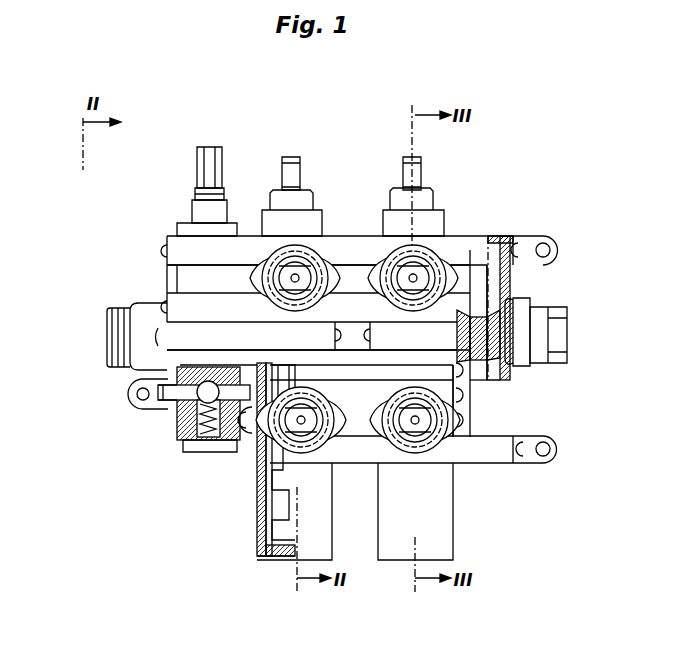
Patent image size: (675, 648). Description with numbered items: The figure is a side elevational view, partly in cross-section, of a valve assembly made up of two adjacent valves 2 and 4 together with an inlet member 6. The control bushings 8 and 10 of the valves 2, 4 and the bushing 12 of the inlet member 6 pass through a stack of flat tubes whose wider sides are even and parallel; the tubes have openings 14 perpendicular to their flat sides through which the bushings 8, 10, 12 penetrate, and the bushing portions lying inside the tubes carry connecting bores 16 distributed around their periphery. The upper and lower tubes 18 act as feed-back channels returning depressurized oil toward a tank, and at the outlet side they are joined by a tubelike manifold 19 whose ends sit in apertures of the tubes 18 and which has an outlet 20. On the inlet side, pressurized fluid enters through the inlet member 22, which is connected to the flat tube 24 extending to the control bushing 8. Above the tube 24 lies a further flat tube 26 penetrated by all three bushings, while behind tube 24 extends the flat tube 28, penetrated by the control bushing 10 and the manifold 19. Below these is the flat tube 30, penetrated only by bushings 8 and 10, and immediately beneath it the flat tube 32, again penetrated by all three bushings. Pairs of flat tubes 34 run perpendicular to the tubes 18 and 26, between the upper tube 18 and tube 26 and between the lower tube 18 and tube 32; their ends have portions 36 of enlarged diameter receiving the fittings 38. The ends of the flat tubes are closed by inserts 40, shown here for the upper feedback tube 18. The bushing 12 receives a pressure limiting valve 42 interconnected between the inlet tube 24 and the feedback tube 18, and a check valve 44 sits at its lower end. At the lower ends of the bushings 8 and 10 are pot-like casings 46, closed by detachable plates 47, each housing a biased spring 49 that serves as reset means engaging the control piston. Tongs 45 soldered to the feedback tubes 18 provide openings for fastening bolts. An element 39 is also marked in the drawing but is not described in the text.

The valve 2 is at (298, 222).
The valve 4 is at (410, 200).
The inlet member 6 is at (188, 221).
The control bushing 8 is at (300, 215).
The control bushing 10 is at (430, 220).
The bushing 12 is at (192, 283).
The openings 14 is at (175, 402).
The connecting bores 16 is at (250, 433).
The feed-back tubes 18 is at (460, 247).
The manifold 19 is at (508, 363).
The outlet 20 is at (557, 343).
The inlet member 22 is at (105, 324).
The flat tube 24 is at (197, 340).
The flat tube 26 is at (178, 307).
The flat tube 28 is at (512, 366).
The flat tube 30 is at (428, 368).
The flat tube 32 is at (347, 397).
The flat tubes 34 is at (253, 267).
The portions of enlarged diameter 36 is at (378, 273).
The fittings 38 is at (273, 263).
The end plate 39 is at (507, 263).
The inserts 40 is at (143, 408).
The pressure limiting valve 42 is at (202, 160).
The check valve 44 is at (183, 442).
The tongs 45 is at (557, 251).
The pot-like casings 46 is at (392, 542).
The detachable plates 47 is at (275, 562).
The biased spring 49 is at (260, 547).